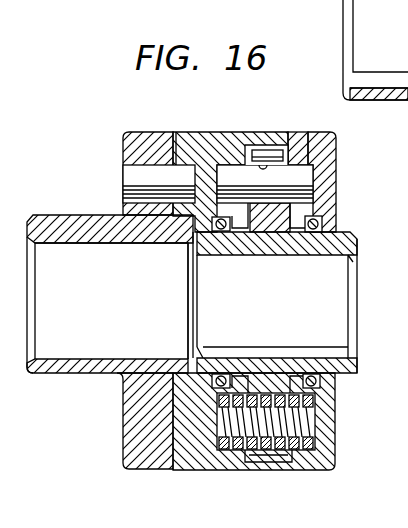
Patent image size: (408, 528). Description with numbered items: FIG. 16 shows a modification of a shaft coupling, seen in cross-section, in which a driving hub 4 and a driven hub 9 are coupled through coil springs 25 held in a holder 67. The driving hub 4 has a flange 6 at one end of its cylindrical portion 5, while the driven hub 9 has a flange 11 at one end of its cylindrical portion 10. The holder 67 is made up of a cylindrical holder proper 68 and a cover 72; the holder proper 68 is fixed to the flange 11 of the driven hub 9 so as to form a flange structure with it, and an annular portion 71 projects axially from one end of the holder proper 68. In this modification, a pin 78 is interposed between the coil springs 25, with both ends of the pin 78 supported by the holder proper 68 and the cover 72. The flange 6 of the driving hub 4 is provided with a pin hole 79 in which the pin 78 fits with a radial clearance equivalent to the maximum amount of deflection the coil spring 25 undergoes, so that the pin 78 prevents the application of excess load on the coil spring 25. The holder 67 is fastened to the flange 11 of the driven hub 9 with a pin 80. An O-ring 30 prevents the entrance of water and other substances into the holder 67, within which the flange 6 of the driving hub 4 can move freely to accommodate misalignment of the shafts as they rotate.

The driving hub 4 is at (292, 288).
The cylindrical portion 5 is at (343, 234).
The flange 6 is at (262, 150).
The driven hub 9 is at (110, 323).
The cylindrical portion 10 is at (83, 227).
The flange 11 is at (128, 433).
The coil springs 25 is at (305, 445).
The O-ring 30 is at (318, 213).
The holder 67 is at (211, 132).
The holder proper 68 is at (187, 143).
The annular portion 71 is at (300, 142).
The cover 72 is at (315, 148).
The pin 78 is at (307, 178).
The pin hole 79 is at (265, 158).
The pin 80 is at (130, 176).